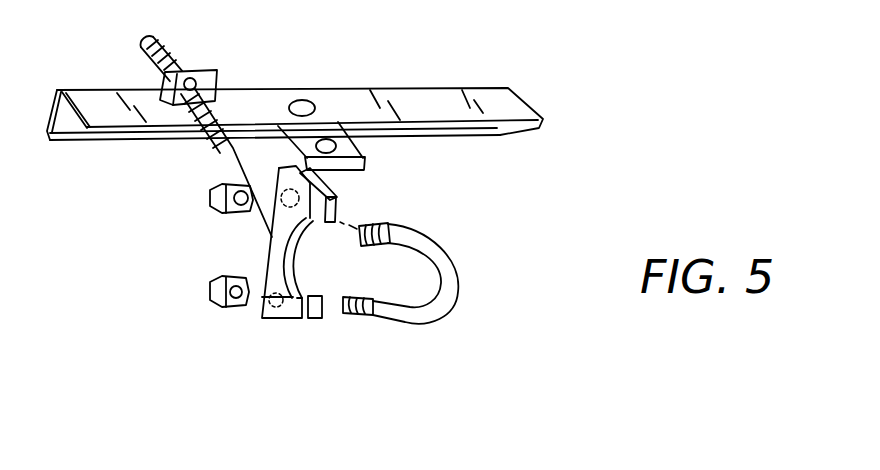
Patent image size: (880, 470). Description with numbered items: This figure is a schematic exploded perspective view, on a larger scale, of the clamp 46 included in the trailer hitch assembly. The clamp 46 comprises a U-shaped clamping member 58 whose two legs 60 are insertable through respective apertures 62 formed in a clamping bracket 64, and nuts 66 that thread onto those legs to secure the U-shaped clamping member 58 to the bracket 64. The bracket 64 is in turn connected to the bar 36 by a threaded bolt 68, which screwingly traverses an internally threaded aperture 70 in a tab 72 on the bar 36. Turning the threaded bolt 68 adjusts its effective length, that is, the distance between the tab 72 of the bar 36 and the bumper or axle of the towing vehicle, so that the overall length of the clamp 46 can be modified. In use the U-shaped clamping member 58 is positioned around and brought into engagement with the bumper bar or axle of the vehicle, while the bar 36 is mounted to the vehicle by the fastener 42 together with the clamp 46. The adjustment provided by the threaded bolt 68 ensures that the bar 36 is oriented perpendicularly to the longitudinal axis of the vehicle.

The bar 36 is at (423, 98).
The fastener 42 is at (353, 172).
The clamp 46 is at (243, 255).
The U-shaped clamping member 58 is at (408, 332).
The legs 60 is at (402, 237).
The apertures 62 is at (273, 327).
The clamping bracket 64 is at (260, 307).
The nuts 66 is at (210, 295).
The threaded bolt 68 is at (230, 166).
The internally threaded aperture 70 is at (217, 82).
The tab 72 is at (195, 85).